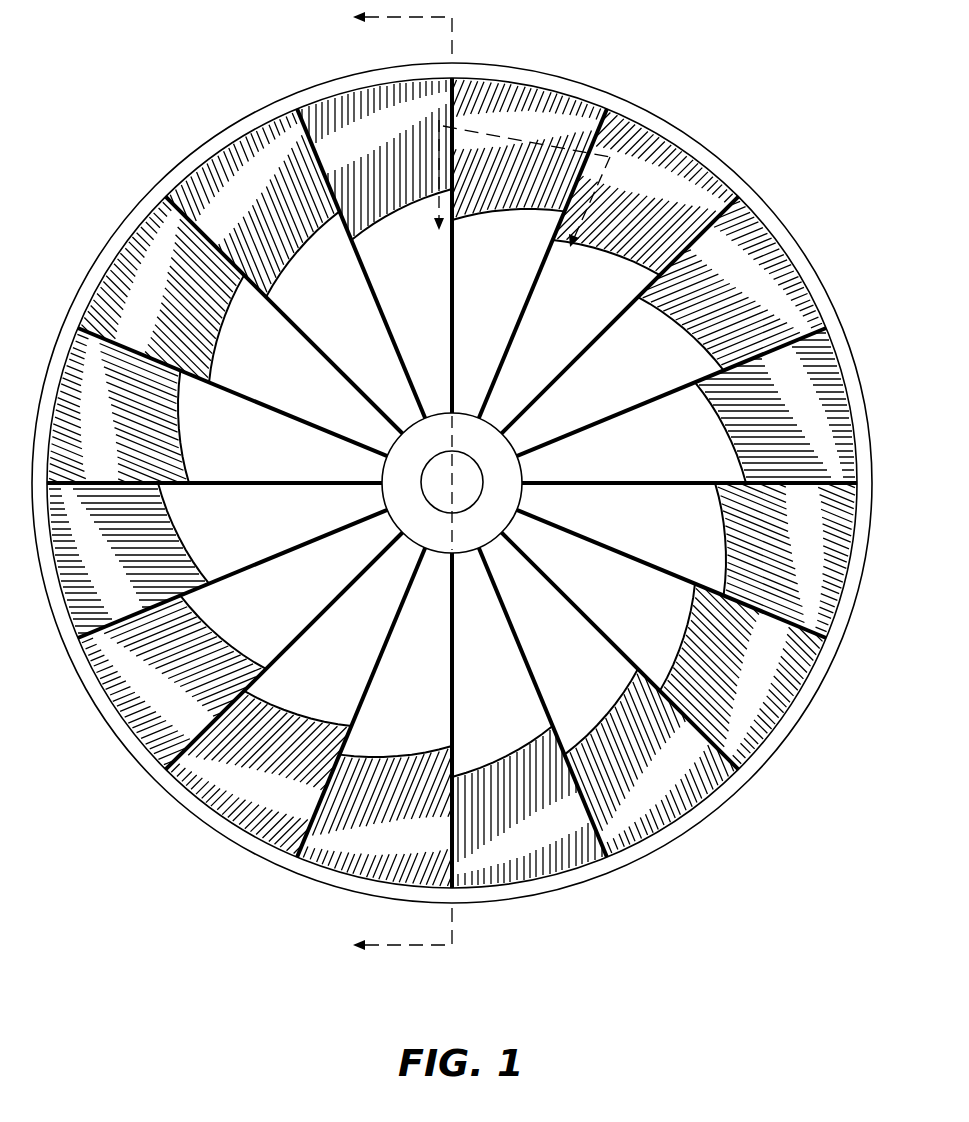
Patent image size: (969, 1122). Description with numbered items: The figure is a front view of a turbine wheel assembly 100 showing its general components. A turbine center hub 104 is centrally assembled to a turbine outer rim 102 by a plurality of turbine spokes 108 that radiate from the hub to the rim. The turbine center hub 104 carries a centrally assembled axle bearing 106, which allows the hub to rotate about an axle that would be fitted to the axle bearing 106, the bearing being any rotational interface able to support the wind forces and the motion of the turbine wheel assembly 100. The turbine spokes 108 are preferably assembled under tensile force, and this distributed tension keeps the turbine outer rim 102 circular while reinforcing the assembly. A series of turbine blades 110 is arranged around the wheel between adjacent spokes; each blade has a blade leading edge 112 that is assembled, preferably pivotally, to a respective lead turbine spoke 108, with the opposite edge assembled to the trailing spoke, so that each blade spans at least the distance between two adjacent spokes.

The turbine wheel assembly 100 is at (200, 80).
The turbine outer rim 102 is at (800, 263).
The turbine center hub 104 is at (494, 462).
The axle bearing 106 is at (438, 489).
The turbine spokes 108 is at (312, 797).
The turbine blades 110 is at (684, 147).
The blade leading edge 112 is at (246, 344).